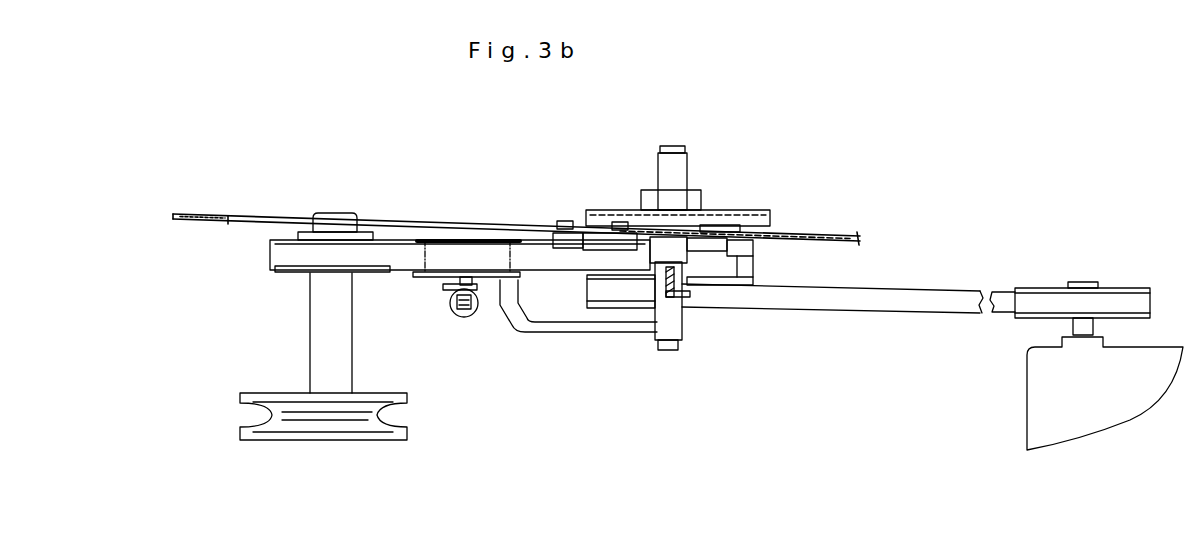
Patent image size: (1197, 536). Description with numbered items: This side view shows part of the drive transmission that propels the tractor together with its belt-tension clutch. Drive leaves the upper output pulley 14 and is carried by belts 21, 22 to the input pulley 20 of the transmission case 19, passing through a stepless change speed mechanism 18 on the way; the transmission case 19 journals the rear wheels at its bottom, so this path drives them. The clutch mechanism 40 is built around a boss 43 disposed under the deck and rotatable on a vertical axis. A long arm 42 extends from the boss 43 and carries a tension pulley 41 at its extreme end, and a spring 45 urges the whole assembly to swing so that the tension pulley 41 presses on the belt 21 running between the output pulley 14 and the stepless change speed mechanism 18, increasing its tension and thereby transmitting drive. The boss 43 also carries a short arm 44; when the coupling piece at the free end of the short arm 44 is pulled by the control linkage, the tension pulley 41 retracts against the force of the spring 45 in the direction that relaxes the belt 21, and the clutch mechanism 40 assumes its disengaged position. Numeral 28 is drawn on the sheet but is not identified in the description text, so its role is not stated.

The upper output pulley 14 is at (383, 441).
The stepless change speed mechanism 18 is at (768, 270).
The transmission case 19 is at (1032, 430).
The input pulley 20 is at (1038, 288).
The belt 21 is at (400, 270).
The belt 22 is at (900, 312).
The plate 28 is at (763, 212).
The clutch mechanism 40 is at (528, 352).
The tension pulley 41 is at (517, 278).
The long arm 42 is at (590, 333).
The boss 43 is at (680, 336).
The short arm 44 is at (674, 295).
The spring 45 is at (467, 318).